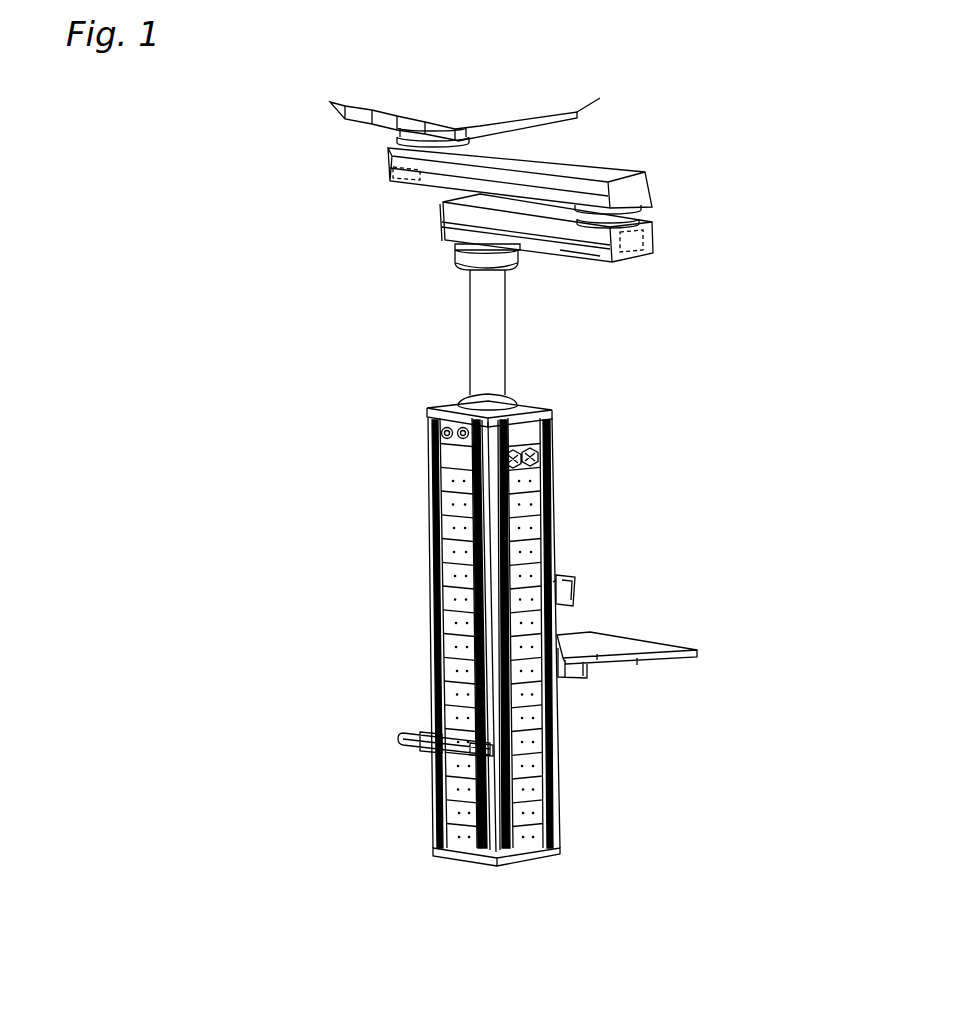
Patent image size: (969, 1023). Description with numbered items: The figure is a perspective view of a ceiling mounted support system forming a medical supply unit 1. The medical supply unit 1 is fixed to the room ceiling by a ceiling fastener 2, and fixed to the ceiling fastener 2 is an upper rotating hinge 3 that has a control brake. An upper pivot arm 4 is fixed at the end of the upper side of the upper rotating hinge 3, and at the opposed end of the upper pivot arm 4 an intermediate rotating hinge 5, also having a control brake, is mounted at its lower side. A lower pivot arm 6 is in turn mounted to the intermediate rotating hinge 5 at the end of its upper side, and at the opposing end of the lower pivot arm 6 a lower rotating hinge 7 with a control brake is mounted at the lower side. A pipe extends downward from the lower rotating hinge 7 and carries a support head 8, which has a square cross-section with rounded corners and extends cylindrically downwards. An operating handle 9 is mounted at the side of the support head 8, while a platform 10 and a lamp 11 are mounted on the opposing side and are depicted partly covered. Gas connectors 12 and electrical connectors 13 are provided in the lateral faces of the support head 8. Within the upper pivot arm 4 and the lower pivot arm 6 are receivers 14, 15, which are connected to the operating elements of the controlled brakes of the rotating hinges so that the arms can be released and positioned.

The medical supply unit 1 is at (288, 700).
The ceiling fastener 2 is at (345, 114).
The upper rotating hinge 3 is at (387, 150).
The upper pivot arm 4 is at (440, 182).
The intermediate rotating hinge 5 is at (645, 217).
The lower pivot arm 6 is at (578, 252).
The lower rotating hinge 7 is at (457, 257).
The support head 8 is at (450, 532).
The operating handle 9 is at (400, 741).
The platform 10 is at (635, 663).
The lamp 11 is at (580, 573).
The gas connectors 12 is at (440, 434).
The electrical connectors 13 is at (550, 452).
The receiver 14 is at (390, 178).
The receiver 15 is at (635, 240).